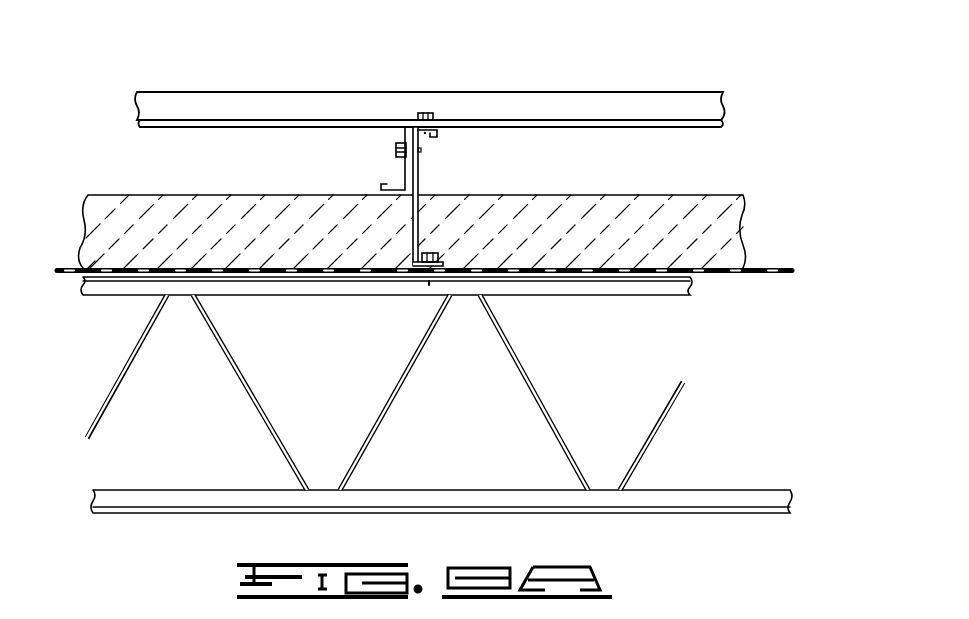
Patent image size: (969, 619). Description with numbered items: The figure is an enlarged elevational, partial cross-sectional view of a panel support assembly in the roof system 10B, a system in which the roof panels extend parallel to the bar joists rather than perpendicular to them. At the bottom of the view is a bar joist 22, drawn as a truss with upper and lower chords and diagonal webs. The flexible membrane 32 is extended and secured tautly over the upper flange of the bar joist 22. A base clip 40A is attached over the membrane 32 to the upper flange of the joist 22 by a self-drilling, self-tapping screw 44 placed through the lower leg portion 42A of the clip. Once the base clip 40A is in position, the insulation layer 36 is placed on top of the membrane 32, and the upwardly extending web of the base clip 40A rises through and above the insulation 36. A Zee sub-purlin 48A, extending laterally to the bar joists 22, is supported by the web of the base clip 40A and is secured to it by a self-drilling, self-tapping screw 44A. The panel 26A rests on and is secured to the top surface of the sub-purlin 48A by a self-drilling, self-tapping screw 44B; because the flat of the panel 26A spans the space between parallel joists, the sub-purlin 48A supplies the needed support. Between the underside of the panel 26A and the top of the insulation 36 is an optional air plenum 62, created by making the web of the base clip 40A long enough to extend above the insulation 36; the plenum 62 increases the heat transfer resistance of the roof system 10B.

The roof system 10B is at (186, 65).
The panel 26A is at (247, 92).
The self-drilling, self-tapping screw 44B is at (428, 112).
The self-drilling, self-tapping screw 44A is at (396, 149).
The Zee sub-purlin 48A is at (405, 177).
The base clip 40A is at (418, 173).
The self-drilling, self-tapping screw 44 is at (468, 208).
The insulation layer 36 is at (88, 195).
The flexible membrane 32 is at (67, 267).
The bar joist 22 is at (118, 378).
The lower leg portion 42A is at (441, 268).
The air plenum 62 is at (604, 150).